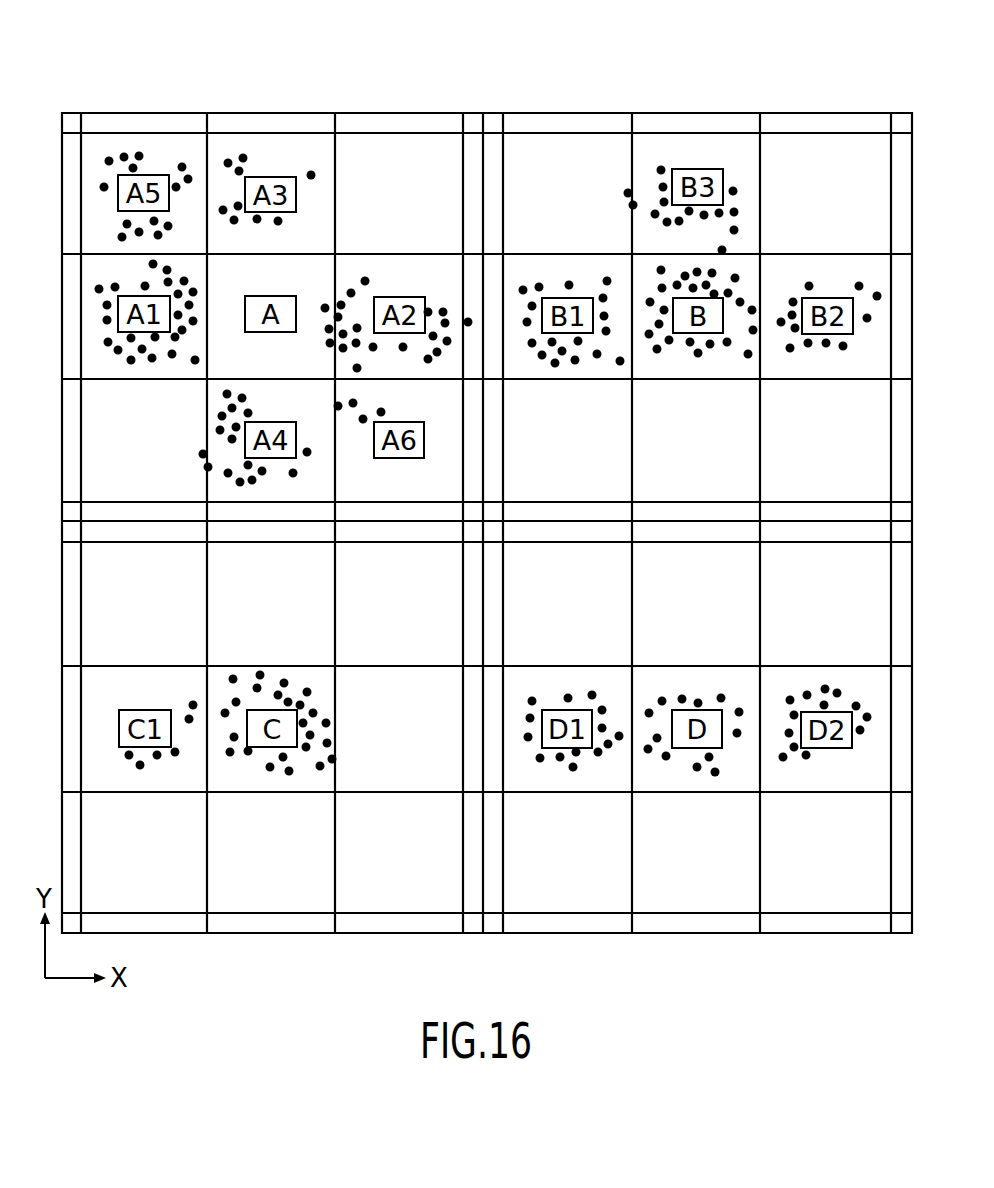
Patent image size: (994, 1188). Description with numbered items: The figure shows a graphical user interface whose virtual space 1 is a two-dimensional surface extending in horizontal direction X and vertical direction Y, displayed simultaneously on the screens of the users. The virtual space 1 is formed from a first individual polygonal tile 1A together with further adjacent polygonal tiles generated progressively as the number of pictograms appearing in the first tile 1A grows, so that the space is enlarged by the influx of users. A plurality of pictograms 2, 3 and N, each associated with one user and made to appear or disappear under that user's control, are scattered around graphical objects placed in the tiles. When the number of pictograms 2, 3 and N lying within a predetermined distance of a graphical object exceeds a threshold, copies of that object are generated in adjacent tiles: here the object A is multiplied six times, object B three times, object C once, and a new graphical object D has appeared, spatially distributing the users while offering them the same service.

The virtual space 1 is at (804, 122).
The pictogram 2 is at (311, 173).
The first individual polygonal tile 1A is at (320, 266).
The pictogram 3 is at (877, 294).
The pictogram N is at (715, 774).